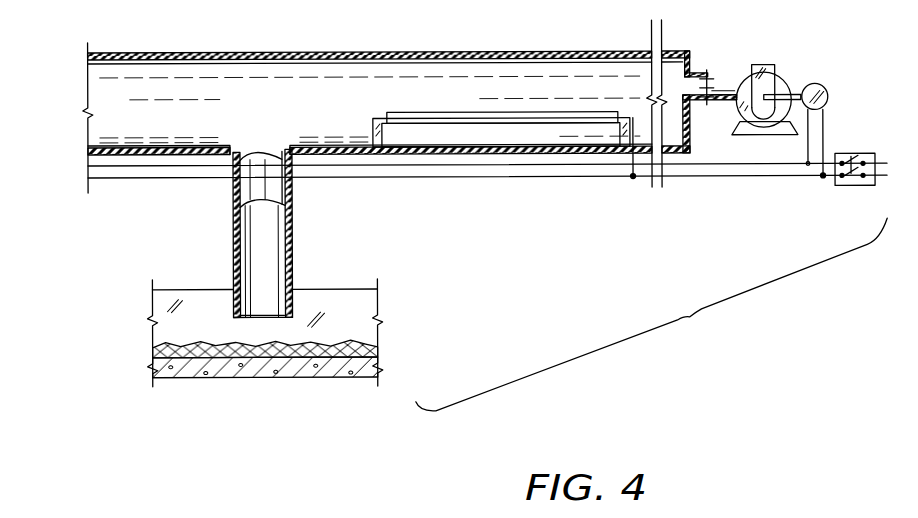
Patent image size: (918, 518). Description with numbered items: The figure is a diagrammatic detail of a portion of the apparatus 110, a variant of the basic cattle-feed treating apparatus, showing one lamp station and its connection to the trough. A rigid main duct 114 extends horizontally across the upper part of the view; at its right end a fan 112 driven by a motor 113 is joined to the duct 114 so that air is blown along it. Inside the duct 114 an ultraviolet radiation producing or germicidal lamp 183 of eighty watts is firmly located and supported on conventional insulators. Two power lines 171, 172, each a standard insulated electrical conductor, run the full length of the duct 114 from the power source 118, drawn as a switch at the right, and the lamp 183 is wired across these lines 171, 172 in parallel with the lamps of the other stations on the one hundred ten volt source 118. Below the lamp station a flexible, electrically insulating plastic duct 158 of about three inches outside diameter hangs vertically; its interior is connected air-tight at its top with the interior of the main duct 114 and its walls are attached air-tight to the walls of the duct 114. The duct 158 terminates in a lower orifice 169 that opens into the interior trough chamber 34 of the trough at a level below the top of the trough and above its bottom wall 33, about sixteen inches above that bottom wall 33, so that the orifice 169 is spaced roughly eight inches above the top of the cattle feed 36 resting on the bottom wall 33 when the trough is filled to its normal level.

The duct 114 is at (460, 71).
The germicidal lamp 183 is at (431, 124).
The fan 112 is at (717, 84).
The motor 113 is at (810, 85).
The power line 171 is at (500, 167).
The power line 172 is at (587, 179).
The power source 118 is at (867, 190).
The plastic duct 158 is at (293, 252).
The lower orifice 169 is at (258, 311).
The interior trough chamber 34 is at (357, 299).
The cattle feed 36 is at (363, 350).
The bottom wall 33 is at (368, 367).
The apparatus 110 is at (651, 314).